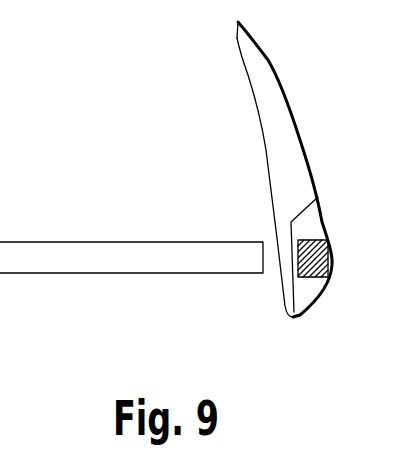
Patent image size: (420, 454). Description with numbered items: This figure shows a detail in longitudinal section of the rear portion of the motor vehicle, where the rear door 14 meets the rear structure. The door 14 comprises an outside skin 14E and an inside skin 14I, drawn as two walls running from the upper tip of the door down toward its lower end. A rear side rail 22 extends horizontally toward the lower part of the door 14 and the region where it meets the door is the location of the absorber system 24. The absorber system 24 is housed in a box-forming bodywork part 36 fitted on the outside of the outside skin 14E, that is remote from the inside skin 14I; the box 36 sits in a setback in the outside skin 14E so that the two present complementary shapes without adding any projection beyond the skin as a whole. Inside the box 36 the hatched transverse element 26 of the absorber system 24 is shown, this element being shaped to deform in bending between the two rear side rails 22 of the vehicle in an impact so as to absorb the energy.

The door 14 is at (269, 166).
The inside skin 14I is at (248, 82).
The outside skin 14E is at (285, 96).
The rear side rail 22 is at (119, 263).
The absorber system 24 is at (252, 220).
The transverse element 26 is at (322, 260).
The box-forming bodywork part 36 is at (324, 212).